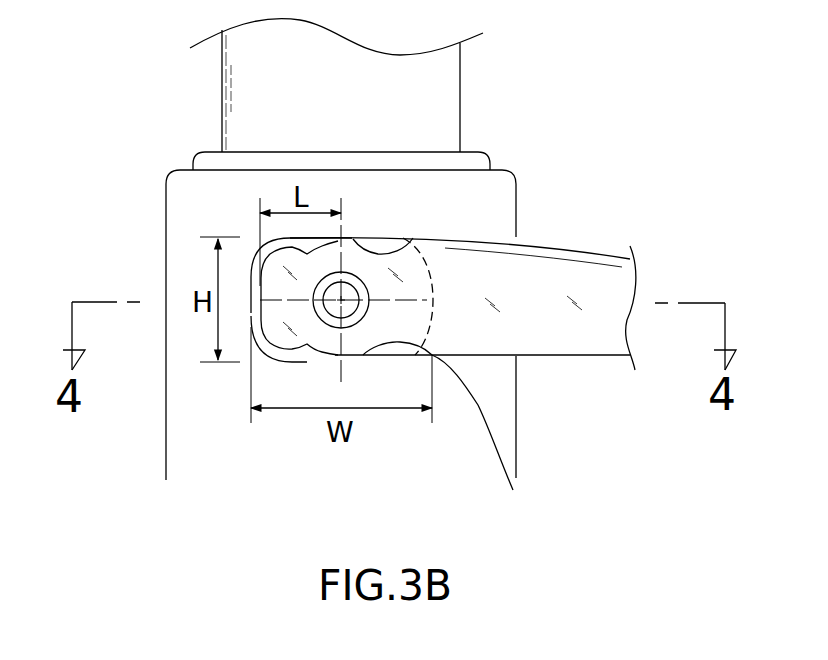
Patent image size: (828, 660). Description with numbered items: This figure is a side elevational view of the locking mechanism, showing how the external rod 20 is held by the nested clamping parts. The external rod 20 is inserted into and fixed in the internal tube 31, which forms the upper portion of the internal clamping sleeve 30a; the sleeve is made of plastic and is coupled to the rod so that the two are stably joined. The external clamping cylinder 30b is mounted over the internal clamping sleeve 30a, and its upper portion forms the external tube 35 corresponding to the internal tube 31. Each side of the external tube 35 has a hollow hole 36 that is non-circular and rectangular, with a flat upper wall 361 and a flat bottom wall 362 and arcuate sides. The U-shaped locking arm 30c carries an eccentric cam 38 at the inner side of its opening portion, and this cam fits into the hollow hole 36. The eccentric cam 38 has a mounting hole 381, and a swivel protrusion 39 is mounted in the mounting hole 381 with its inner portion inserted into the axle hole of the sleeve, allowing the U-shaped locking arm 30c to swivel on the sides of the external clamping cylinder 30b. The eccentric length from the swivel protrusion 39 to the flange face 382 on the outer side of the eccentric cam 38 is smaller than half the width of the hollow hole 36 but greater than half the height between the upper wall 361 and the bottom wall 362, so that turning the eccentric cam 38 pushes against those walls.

The external rod 20 is at (443, 83).
The internal clamping sleeve 30a is at (360, 126).
The external clamping cylinder 30b is at (128, 236).
The U-shaped locking arm 30c is at (588, 256).
The internal tube 31 is at (206, 160).
The external tube 35 is at (278, 301).
The hollow hole 36 is at (395, 355).
The upper wall 361 is at (413, 238).
The bottom wall 362 is at (513, 490).
The eccentric cam 38 is at (220, 351).
The mounting hole 381 is at (454, 321).
The flange face 382 is at (260, 312).
The swivel protrusion 39 is at (425, 308).